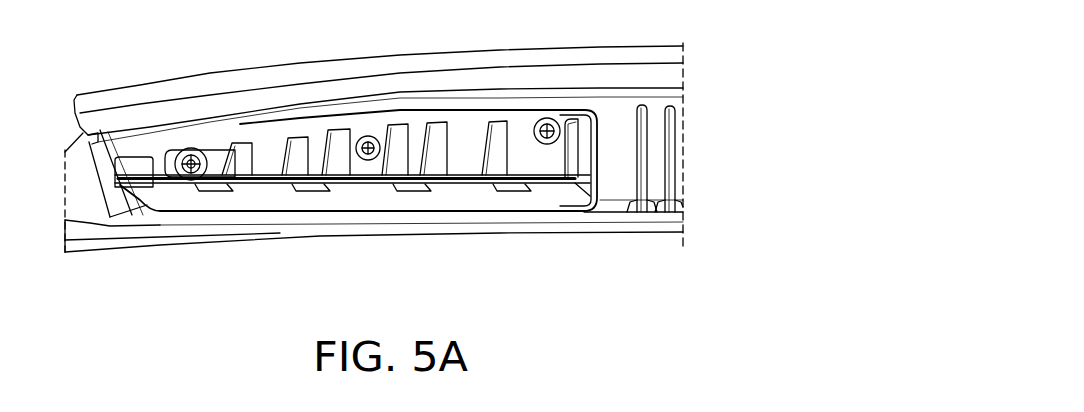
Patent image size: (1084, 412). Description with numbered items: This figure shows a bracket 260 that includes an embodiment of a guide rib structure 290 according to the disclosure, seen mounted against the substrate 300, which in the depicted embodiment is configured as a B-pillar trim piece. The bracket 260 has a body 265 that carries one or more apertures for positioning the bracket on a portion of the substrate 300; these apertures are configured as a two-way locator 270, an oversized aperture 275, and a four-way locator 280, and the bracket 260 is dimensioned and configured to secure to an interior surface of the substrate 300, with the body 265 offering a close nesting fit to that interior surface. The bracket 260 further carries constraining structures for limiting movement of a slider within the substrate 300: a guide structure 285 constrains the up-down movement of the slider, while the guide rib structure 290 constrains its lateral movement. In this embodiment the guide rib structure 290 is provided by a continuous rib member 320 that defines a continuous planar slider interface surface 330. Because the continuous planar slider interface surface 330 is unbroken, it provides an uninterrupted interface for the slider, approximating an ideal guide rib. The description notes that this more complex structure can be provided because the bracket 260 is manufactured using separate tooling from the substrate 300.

The bracket 260 is at (598, 150).
The body 265 is at (580, 113).
The two-way locator 270 is at (198, 148).
The oversized aperture 275 is at (378, 134).
The four-way locator 280 is at (550, 118).
The guide structure 285 is at (235, 155).
The guide rib structure 290 is at (263, 200).
The substrate 300 is at (112, 121).
The continuous rib member 320 is at (568, 198).
The continuous planar slider interface surface 330 is at (350, 198).